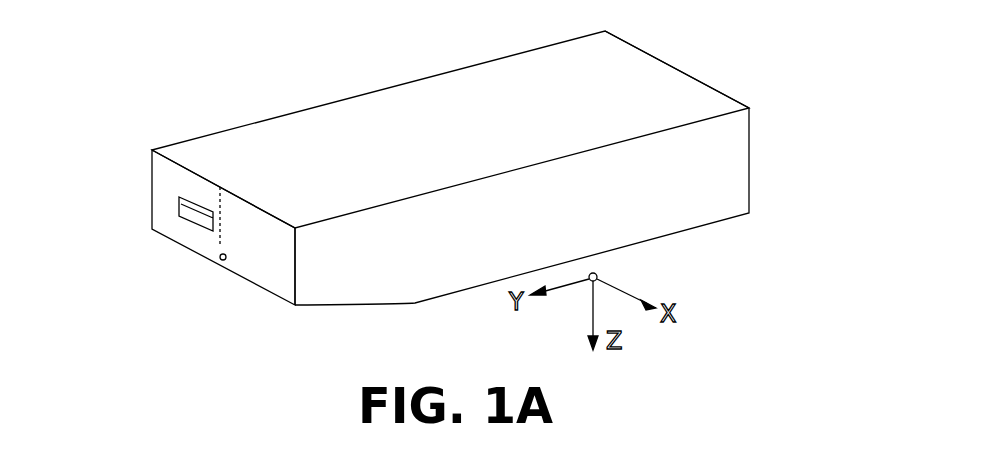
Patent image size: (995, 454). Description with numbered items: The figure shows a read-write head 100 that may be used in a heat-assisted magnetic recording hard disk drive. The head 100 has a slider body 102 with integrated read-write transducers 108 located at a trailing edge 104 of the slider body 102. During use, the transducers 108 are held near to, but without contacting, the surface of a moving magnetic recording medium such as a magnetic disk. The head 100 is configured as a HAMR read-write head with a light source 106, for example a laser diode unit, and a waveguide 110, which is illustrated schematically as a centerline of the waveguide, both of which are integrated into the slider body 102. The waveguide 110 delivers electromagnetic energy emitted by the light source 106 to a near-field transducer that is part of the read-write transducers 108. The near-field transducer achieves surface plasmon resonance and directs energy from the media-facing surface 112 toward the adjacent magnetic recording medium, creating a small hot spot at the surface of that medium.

The read-write head 100 is at (447, 197).
The slider body 102 is at (405, 90).
The trailing edge 104 is at (152, 211).
The light source 106 is at (190, 218).
The read-write transducers 108 is at (219, 285).
The waveguide 110 is at (220, 246).
The media-facing surface 112 is at (291, 308).